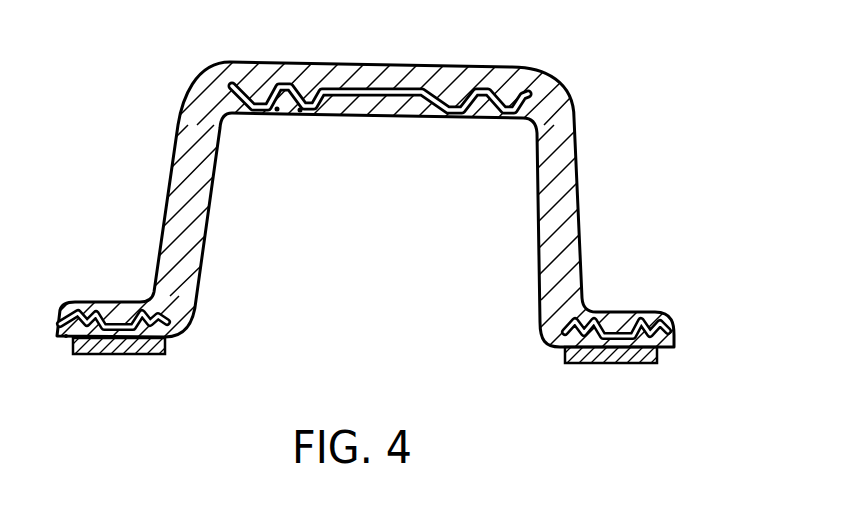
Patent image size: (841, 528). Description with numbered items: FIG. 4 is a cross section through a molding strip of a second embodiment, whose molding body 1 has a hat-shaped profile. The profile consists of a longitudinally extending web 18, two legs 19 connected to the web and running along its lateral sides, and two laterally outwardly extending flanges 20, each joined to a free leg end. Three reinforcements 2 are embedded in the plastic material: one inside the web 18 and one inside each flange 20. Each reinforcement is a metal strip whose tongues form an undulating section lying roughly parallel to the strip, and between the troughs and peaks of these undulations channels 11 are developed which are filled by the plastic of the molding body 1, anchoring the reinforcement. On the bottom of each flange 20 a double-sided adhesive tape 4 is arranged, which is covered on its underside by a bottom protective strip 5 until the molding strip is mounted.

The molding body 1 is at (562, 155).
The reinforcements 2 is at (455, 98).
The double-sided adhesive tape 4 is at (112, 355).
The bottom protective strip 5 is at (628, 363).
The channels 11 is at (300, 112).
The web 18 is at (403, 61).
The legs 19 is at (166, 176).
The flanges 20 is at (103, 302).